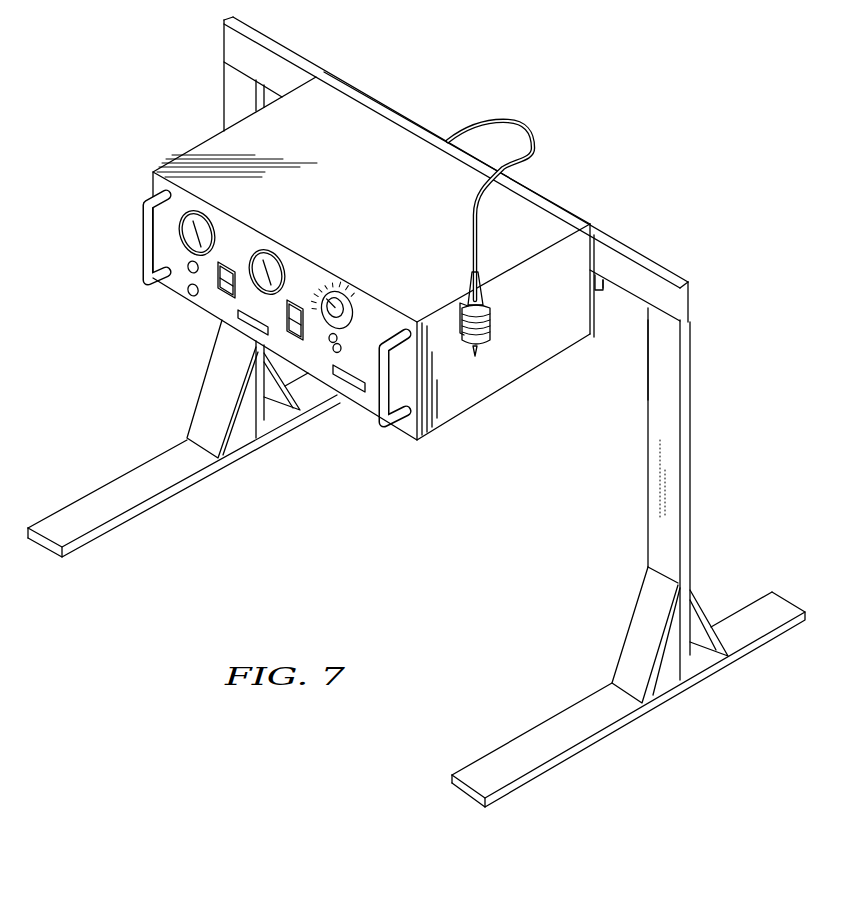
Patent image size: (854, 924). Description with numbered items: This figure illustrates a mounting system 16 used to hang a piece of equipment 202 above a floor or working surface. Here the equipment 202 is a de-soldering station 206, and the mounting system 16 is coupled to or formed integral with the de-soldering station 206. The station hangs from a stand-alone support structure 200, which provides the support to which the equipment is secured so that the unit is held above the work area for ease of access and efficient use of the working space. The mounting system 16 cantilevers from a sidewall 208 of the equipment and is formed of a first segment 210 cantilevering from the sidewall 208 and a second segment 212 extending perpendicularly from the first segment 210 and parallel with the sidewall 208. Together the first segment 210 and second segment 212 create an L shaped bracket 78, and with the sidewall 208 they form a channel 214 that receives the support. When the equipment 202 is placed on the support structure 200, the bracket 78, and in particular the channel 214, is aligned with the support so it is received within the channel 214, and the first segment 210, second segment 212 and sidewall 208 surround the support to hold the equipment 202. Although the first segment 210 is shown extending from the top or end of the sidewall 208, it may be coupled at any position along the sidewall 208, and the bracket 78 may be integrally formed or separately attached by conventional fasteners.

The mounting system 16 is at (572, 136).
The equipment 202 is at (403, 224).
The first segment 210 is at (595, 226).
The second segment 212 is at (607, 228).
The channel 214 is at (618, 303).
The L shaped bracket 78 is at (626, 332).
The sidewall 208 is at (594, 297).
The de-soldering station 206 is at (470, 408).
The stand-alone support structure 200 is at (660, 443).